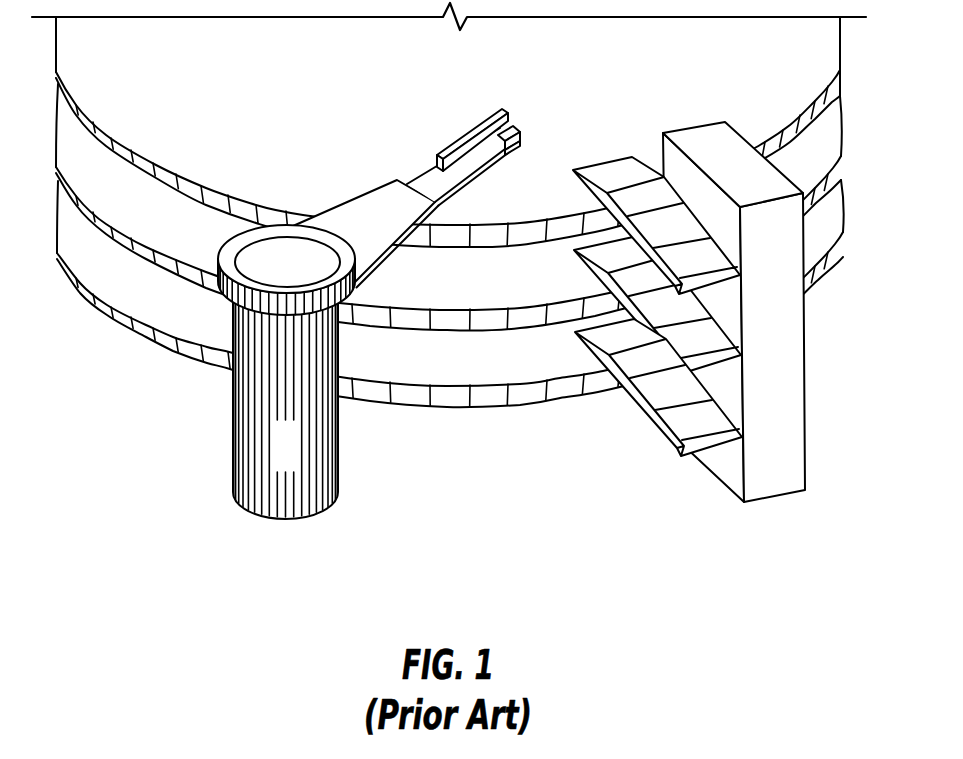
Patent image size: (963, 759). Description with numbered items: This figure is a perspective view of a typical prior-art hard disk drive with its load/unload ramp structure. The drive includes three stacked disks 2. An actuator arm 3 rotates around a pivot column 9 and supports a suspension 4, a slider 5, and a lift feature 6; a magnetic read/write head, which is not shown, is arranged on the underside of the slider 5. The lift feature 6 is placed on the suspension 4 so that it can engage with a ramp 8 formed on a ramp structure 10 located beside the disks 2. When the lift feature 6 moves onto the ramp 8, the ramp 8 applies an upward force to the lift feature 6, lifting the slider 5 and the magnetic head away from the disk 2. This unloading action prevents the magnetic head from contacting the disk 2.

The disks 2 is at (513, 209).
The actuator arm 3 is at (381, 203).
The suspension 4 is at (513, 128).
The slider 5 is at (518, 143).
The lift feature 6 is at (483, 126).
The ramp 8 is at (621, 172).
The pivot column 9 is at (276, 463).
The ramp structure 10 is at (817, 370).